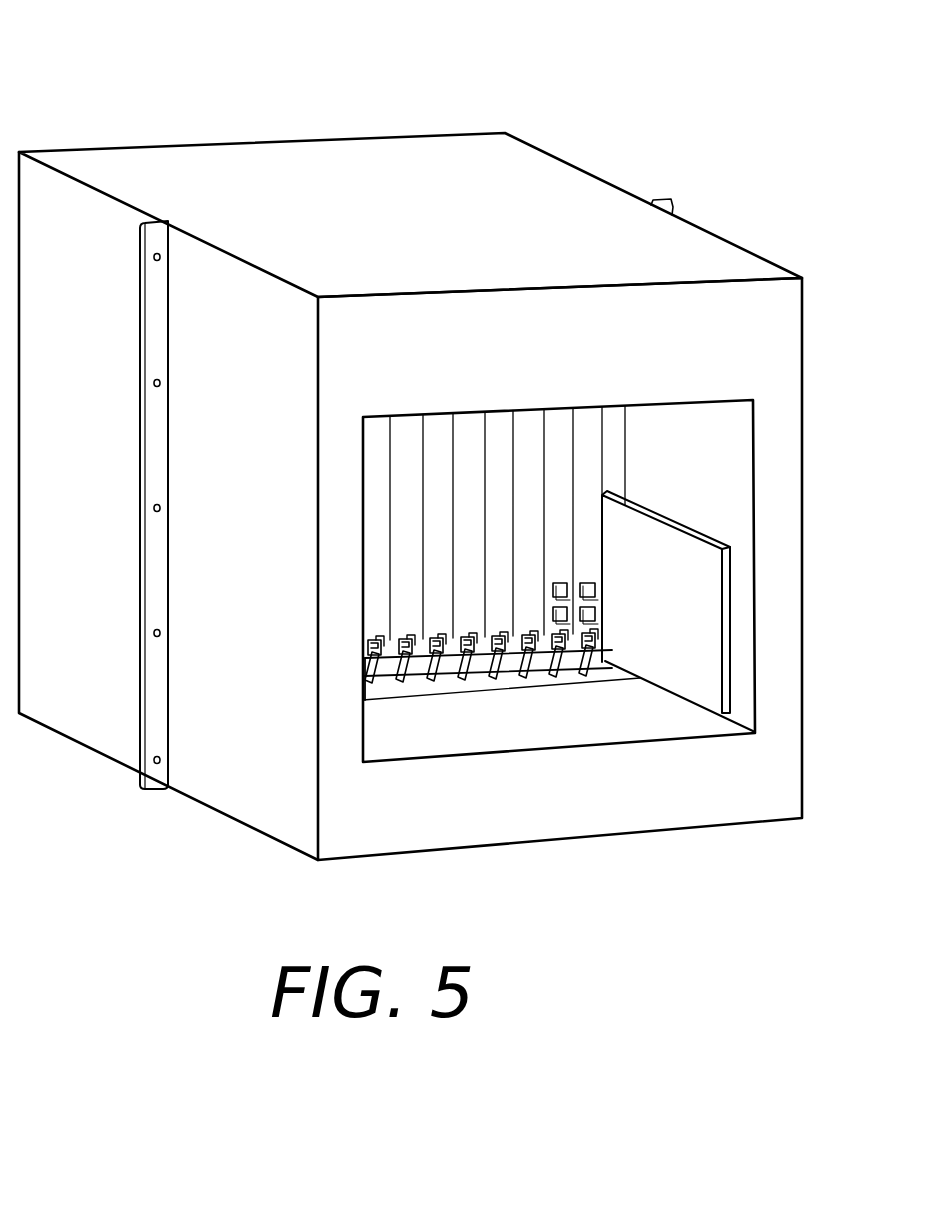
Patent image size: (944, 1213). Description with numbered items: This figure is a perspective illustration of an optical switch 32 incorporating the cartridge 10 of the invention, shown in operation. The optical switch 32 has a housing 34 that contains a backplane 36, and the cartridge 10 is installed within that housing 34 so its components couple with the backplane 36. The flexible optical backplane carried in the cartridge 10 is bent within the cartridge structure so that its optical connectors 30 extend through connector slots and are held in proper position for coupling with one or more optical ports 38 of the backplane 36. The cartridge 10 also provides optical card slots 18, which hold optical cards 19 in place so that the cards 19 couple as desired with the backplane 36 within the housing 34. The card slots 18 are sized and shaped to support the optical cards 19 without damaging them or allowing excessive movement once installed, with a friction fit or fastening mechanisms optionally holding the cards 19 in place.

The cartridge 10 is at (435, 683).
The optical card slots 18 is at (528, 668).
The optical cards 19 is at (695, 563).
The optical connectors 30 is at (470, 645).
The optical switch 32 is at (268, 104).
The housing 34 is at (75, 655).
The backplane 36 is at (613, 453).
The optical ports 38 is at (420, 645).